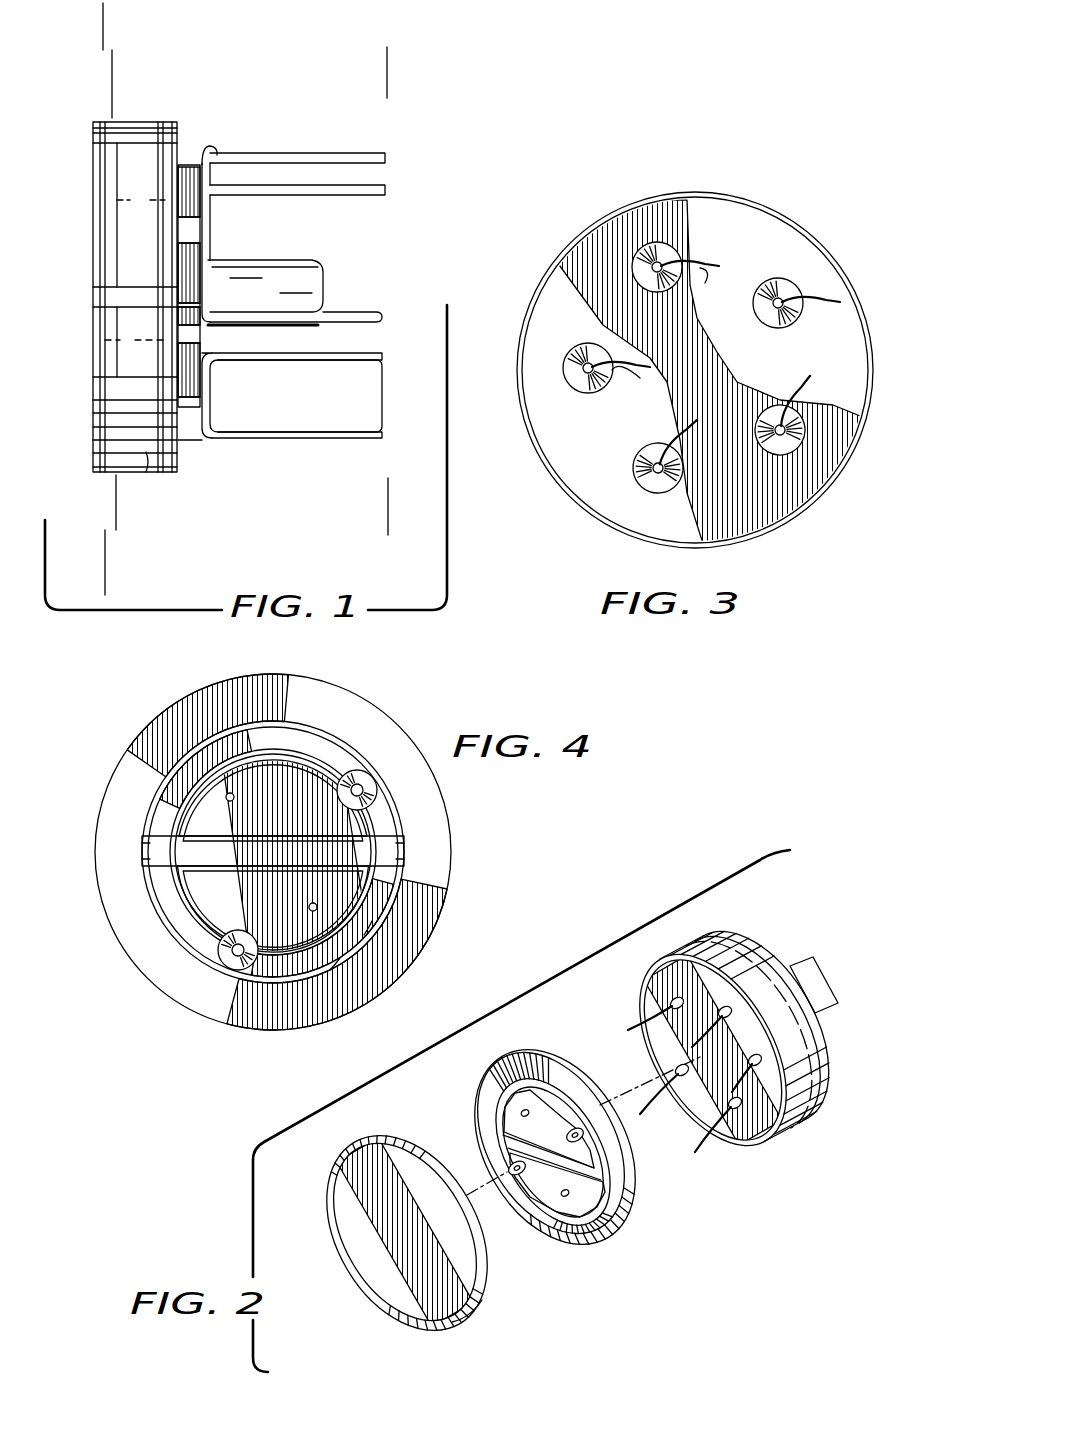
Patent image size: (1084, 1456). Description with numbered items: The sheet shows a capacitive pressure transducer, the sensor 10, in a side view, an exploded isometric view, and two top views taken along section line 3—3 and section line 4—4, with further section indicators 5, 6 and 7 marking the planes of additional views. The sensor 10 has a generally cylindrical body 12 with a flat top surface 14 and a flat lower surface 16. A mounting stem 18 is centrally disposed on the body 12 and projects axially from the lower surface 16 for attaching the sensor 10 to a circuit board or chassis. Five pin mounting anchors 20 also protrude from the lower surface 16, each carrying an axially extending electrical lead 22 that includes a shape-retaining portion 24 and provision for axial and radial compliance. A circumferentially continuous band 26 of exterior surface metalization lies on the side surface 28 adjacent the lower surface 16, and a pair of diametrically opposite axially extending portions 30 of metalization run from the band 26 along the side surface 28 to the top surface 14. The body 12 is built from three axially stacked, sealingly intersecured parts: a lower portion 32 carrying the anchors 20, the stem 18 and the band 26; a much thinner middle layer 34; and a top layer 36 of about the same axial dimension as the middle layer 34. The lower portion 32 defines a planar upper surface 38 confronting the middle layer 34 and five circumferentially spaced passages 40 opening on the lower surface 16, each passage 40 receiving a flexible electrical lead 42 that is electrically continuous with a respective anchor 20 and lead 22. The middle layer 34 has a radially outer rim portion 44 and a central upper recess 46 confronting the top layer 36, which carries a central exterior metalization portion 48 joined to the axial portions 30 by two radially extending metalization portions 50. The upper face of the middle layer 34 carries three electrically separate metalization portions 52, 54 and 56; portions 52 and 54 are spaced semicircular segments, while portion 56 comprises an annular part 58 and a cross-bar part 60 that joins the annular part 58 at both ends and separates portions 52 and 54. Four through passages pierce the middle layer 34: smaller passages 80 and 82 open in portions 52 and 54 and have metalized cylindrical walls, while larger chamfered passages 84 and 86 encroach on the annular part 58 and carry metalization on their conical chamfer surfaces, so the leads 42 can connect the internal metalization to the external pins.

In FIG. 1, the section line 3— 3 is at (123, 92).
In FIG. 1, the section line 4— 4 is at (127, 38).
In FIG. 1, the section line 5- 5 is at (93, 68).
In FIG. 1, the section line 6- 6 is at (95, 15).
In FIG. 1, the section line 7- 7 is at (375, 75).
In FIG. 1, the sensor 10 is at (274, 100).
In FIG. 2, the sensor 10 is at (735, 1190).
In FIG. 1, the body 12 is at (150, 122).
In FIG. 1, the top surface 14 is at (93, 172).
In FIG. 2, the top surface 14 is at (452, 1322).
In FIG. 1, the lower surface 16 is at (190, 440).
In FIG. 1, the mounting stem 18 is at (300, 262).
In FIG. 1, the pin mounting anchors 20 is at (204, 152).
In FIG. 1, the electrical leads 22 is at (385, 162).
In FIG. 2, the electrical leads 22 is at (836, 1000).
In FIG. 1, the shape-retaining portion 24 is at (312, 157).
In FIG. 1, the band of exterior surface metalization 26 is at (190, 450).
In FIG. 2, the band of exterior surface metalization 26 is at (778, 962).
In FIG. 1, the side surface 28 is at (130, 258).
In FIG. 1, the axially extending portions of exterior surface metalization 30 is at (105, 297).
In FIG. 2, the axially extending portions of exterior surface metalization 30 is at (635, 1205).
In FIG. 1, the lower portion 32 is at (148, 470).
In FIG. 3, the lower portion 32 is at (620, 208).
In FIG. 2, the lower portion 32 is at (737, 963).
In FIG. 1, the middle layer 34 is at (110, 335).
In FIG. 4, the middle layer 34 is at (118, 940).
In FIG. 2, the middle layer 34 is at (588, 1075).
In FIG. 1, the top layer 36 is at (100, 392).
In FIG. 2, the top layer 36 is at (405, 1138).
In FIG. 3, the planar upper surface 38 is at (765, 225).
In FIG. 2, the planar upper surface 38 is at (745, 1100).
In FIG. 3, the passages 40 is at (642, 290).
In FIG. 2, the passages 40 is at (720, 1006).
In FIG. 3, the flexible electrical leads 42 is at (705, 283).
In FIG. 2, the flexible electrical leads 42 is at (650, 1020).
In FIG. 4, the radially outer rim portion 44 is at (305, 1030).
In FIG. 2, the radially outer rim portion 44 is at (590, 1243).
In FIG. 4, the central upper recess 46 is at (232, 722).
In FIG. 2, the central upper recess 46 is at (527, 1200).
In FIG. 2, the central exterior surface metalization portion 48 is at (385, 1278).
In FIG. 2, the radially extending surface metalization portions 50 is at (328, 1195).
In FIG. 4, the surface metalization portion 52 is at (269, 820).
In FIG. 4, the surface metalization portion 54 is at (214, 899).
In FIG. 4, the surface metalization portion 56 is at (383, 942).
In FIG. 4, the annular part 58 is at (345, 965).
In FIG. 4, the cross-bar part 60 is at (225, 848).
In FIG. 4, the through passage 80 is at (235, 795).
In FIG. 4, the through passage 82 is at (310, 909).
In FIG. 4, the through passage 84 is at (360, 771).
In FIG. 4, the through passage 86 is at (220, 962).